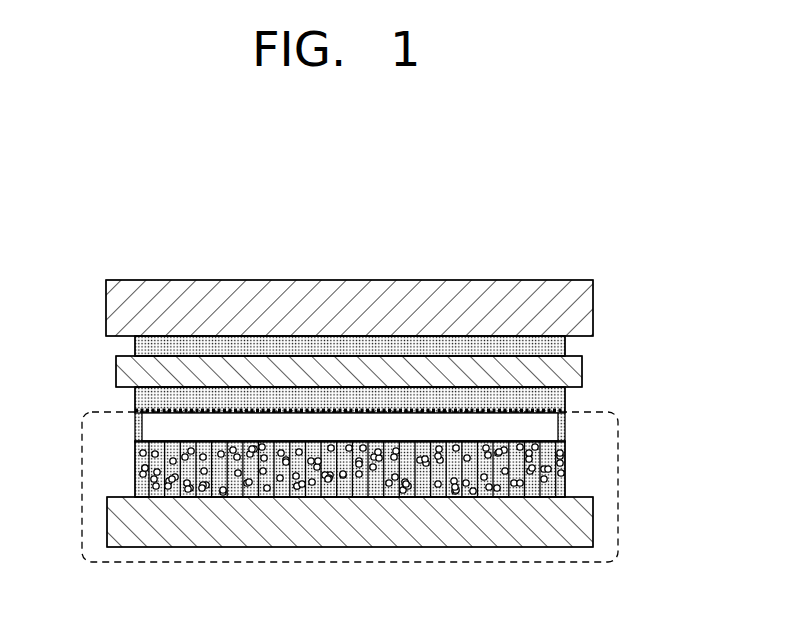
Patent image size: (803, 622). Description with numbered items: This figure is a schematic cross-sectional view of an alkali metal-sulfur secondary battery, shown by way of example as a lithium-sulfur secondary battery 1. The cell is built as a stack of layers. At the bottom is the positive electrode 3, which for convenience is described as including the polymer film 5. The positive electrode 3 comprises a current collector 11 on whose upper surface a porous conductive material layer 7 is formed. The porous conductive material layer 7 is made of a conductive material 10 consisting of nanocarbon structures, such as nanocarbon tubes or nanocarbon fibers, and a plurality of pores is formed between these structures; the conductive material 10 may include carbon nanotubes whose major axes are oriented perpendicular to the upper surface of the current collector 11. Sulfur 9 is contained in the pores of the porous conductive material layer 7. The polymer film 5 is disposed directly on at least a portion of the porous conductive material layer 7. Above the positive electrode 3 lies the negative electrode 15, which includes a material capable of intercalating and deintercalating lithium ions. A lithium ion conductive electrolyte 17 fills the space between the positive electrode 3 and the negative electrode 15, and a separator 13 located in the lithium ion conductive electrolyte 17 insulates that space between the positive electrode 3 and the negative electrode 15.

The lithium-sulfur secondary battery 1 is at (525, 240).
The positive electrode 3 is at (620, 489).
The polymer film 5 is at (547, 429).
The porous conductive material layer 7 is at (335, 526).
The sulfur 9 is at (140, 440).
The conductive material 10 is at (160, 493).
The current collector 11 is at (117, 522).
The separator 13 is at (573, 372).
The negative electrode 15 is at (583, 312).
The lithium ion conductive electrolyte 17 is at (553, 400).